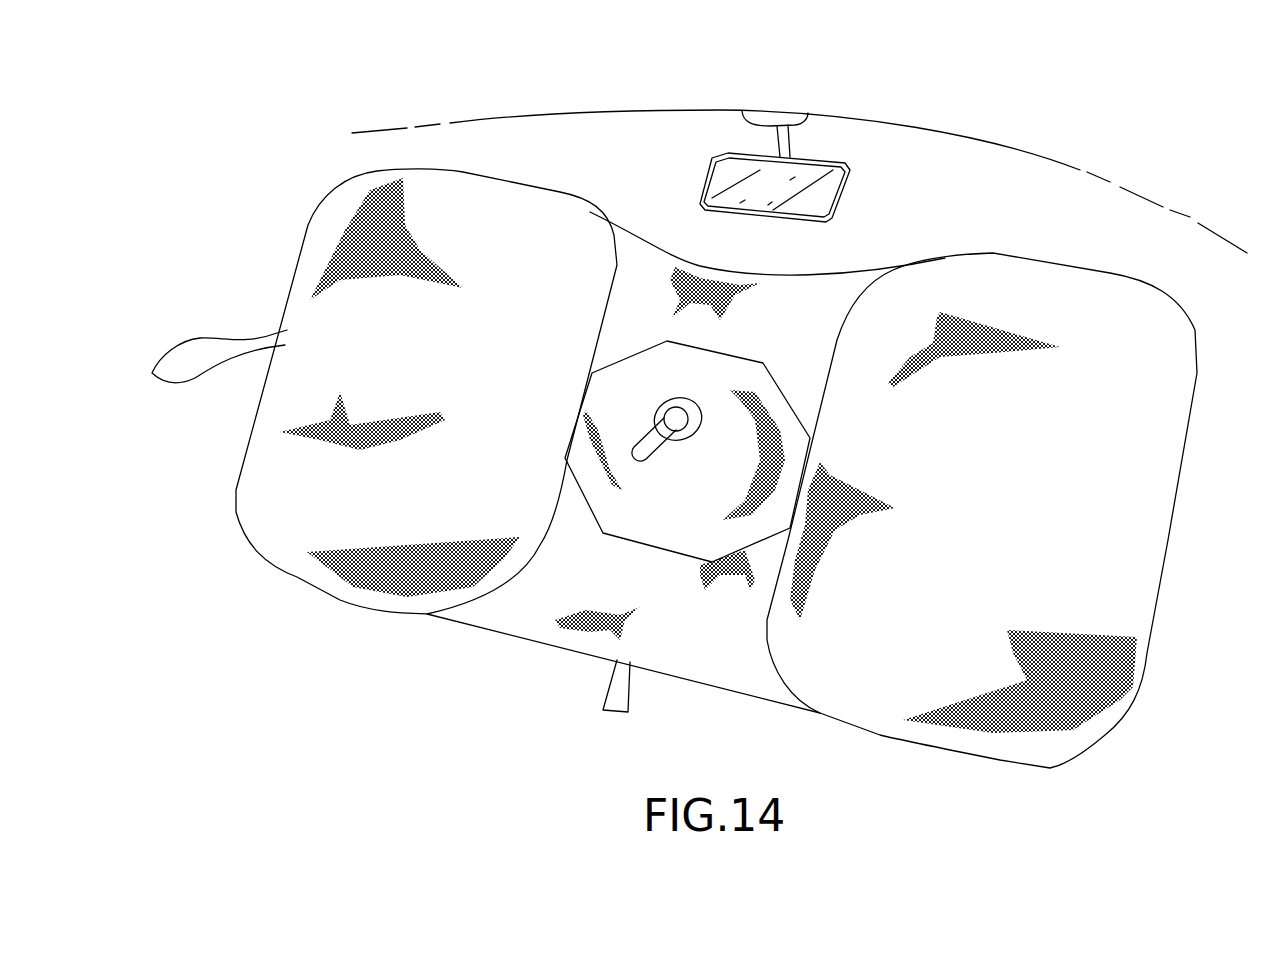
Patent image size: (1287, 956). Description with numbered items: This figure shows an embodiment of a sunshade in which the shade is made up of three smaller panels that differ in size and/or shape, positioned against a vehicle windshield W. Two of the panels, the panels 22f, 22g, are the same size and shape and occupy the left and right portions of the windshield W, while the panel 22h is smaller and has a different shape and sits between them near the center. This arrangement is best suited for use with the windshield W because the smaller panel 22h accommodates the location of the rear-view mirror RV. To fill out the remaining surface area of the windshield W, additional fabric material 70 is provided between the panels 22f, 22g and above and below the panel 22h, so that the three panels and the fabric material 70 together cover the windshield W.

The windshield W is at (712, 110).
The rear-view mirror RV is at (850, 186).
The additional fabric material 70 is at (787, 326).
The panel 22f is at (473, 207).
The panel 22g is at (1020, 277).
The panel 22h is at (640, 533).